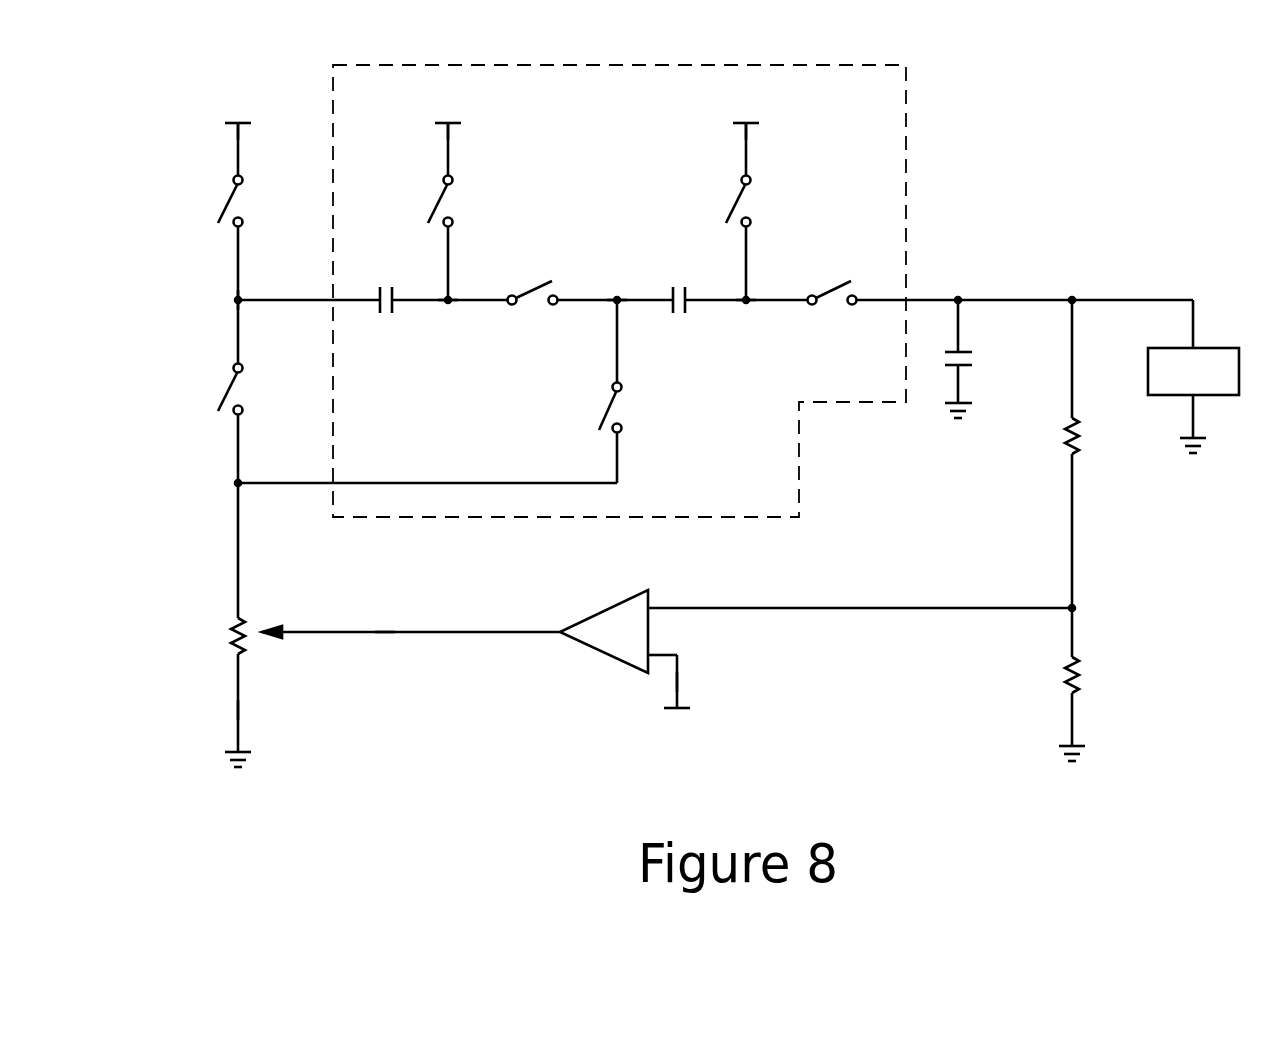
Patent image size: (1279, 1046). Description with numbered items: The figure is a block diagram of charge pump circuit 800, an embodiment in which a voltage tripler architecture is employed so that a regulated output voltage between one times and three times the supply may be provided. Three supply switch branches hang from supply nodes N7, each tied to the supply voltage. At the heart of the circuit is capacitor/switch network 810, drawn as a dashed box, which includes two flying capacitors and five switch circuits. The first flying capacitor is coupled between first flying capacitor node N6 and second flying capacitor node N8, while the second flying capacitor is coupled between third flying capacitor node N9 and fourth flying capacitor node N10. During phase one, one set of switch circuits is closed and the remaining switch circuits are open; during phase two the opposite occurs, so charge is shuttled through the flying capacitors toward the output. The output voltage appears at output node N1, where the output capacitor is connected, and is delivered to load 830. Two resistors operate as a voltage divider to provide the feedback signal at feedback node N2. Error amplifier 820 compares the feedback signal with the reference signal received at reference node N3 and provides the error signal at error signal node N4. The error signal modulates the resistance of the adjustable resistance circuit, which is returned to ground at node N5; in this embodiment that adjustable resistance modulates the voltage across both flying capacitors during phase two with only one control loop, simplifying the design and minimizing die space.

The charge pump circuit 800 is at (960, 104).
The capacitor/switch network 810 is at (607, 119).
The error amplifier 820 is at (603, 611).
The load 830 is at (1218, 348).
The output node N1 is at (958, 297).
The feedback node N2 is at (1075, 610).
The reference node N3 is at (677, 682).
The error signal node N4 is at (385, 632).
The ground node N5 is at (238, 708).
The first flying capacitor node N6 is at (236, 306).
The supply voltage node N7 is at (240, 126).
The second flying capacitor node N8 is at (448, 305).
The third flying capacitor node N9 is at (617, 297).
The fourth flying capacitor node N10 is at (746, 305).